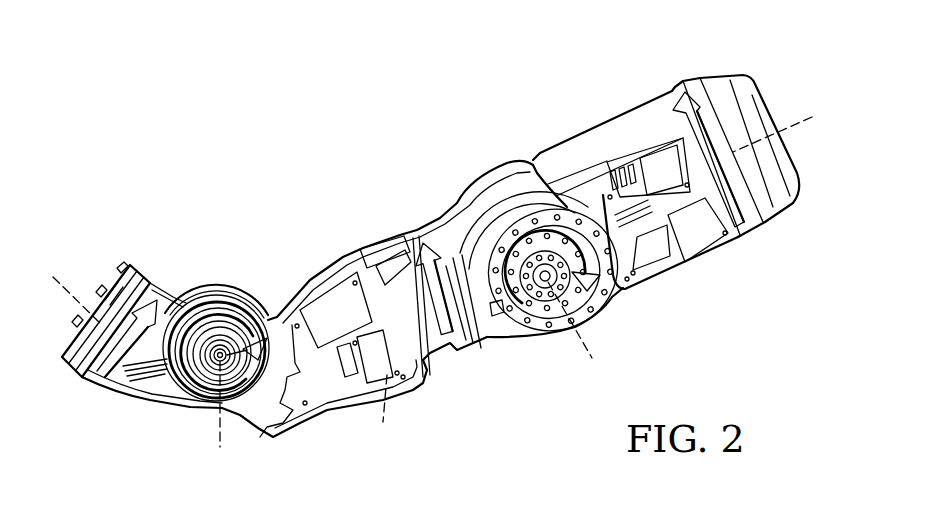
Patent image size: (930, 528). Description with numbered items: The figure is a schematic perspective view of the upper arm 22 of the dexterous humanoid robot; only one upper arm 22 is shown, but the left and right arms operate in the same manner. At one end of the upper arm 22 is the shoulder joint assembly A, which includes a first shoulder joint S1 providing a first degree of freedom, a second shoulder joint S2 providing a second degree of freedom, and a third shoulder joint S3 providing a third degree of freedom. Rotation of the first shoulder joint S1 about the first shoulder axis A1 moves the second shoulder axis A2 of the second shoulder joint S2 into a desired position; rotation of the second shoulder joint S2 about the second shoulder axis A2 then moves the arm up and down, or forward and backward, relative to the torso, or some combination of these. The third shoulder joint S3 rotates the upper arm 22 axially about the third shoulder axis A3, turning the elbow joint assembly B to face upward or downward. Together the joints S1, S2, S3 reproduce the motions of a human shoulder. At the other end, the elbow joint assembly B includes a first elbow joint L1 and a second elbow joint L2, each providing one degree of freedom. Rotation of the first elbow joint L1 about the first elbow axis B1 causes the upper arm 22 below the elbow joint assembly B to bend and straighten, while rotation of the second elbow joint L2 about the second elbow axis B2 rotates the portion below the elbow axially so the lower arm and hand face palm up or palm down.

The upper arm 22 is at (343, 182).
The shoulder joint assembly A is at (457, 127).
The first shoulder axis A1 is at (787, 120).
The second shoulder axis A2 is at (590, 362).
The third shoulder axis A3 is at (383, 409).
The elbow joint assembly B is at (166, 422).
The first elbow axis B1 is at (228, 440).
The second elbow axis B2 is at (64, 282).
The first elbow joint L1 is at (217, 280).
The second elbow joint L2 is at (80, 395).
The first shoulder joint S1 is at (688, 67).
The second shoulder joint S2 is at (622, 316).
The third shoulder joint S3 is at (480, 362).